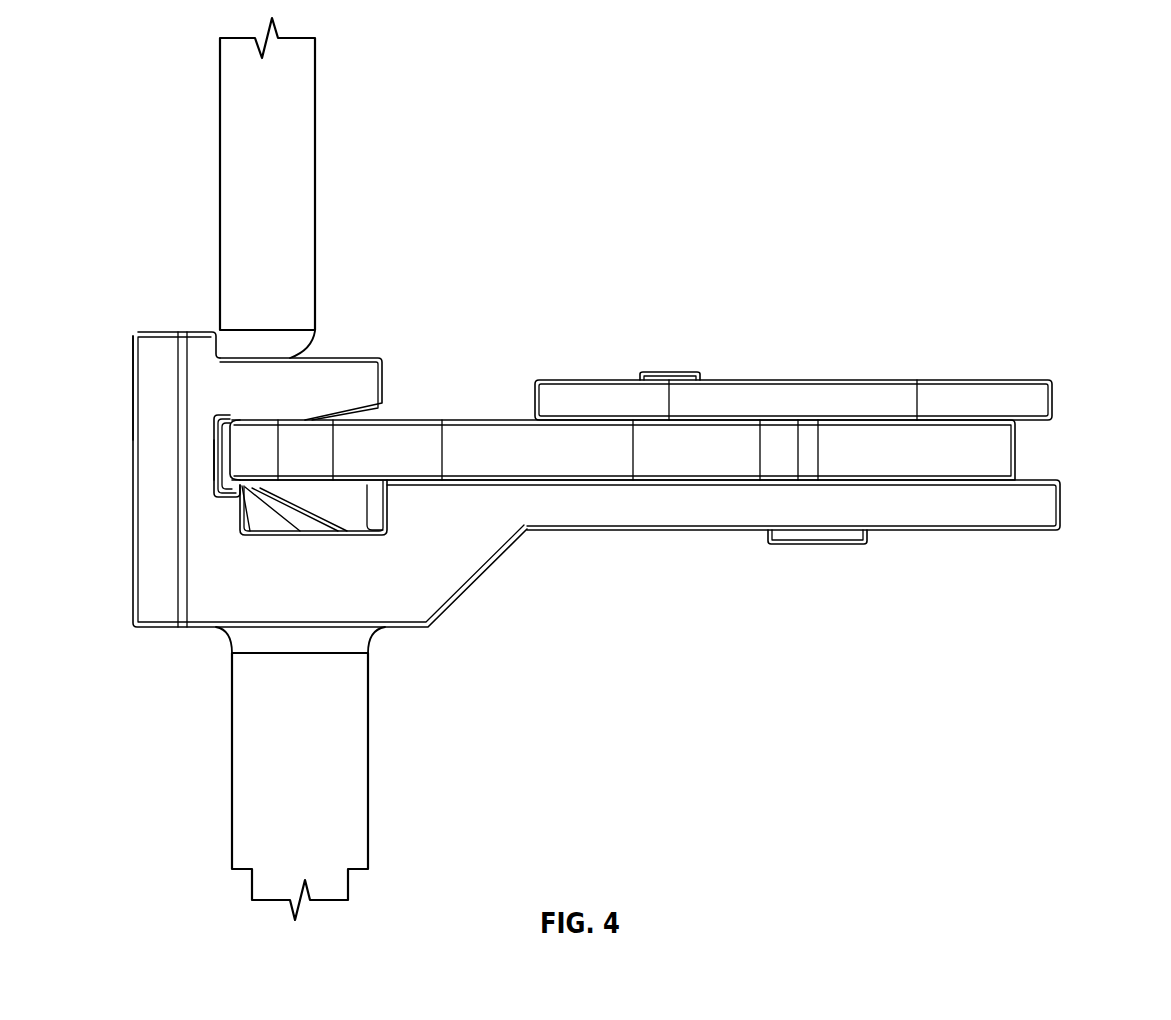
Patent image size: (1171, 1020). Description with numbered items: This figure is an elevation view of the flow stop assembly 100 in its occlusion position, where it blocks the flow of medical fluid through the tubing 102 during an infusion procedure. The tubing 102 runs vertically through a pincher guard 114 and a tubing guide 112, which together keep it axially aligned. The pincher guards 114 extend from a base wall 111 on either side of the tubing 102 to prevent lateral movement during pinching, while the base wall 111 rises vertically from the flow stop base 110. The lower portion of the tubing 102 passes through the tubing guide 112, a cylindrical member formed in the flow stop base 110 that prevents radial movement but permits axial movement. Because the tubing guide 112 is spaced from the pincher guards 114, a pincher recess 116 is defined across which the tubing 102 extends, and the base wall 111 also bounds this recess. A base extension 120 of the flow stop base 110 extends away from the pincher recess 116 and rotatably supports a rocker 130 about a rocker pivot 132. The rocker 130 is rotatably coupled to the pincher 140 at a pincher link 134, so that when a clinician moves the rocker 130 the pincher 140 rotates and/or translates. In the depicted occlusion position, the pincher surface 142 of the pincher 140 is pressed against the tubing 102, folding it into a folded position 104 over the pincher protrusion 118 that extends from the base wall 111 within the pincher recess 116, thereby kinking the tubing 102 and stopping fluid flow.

The flow stop assembly 100 is at (1072, 93).
The tubing 102 is at (300, 82).
The folded position 104 is at (218, 440).
The flow stop base 110 is at (282, 616).
The base wall 111 is at (133, 440).
The tubing guide 112 is at (245, 805).
The pincher guard 114 is at (285, 383).
The pincher recess 116 is at (215, 462).
The pincher protrusion 118 is at (238, 510).
The base extension 120 is at (945, 513).
The rocker 130 is at (1045, 402).
The rocker pivot 132 is at (980, 376).
The pincher link 134 is at (668, 372).
The pincher 140 is at (455, 432).
The pincher surface 142 is at (233, 438).